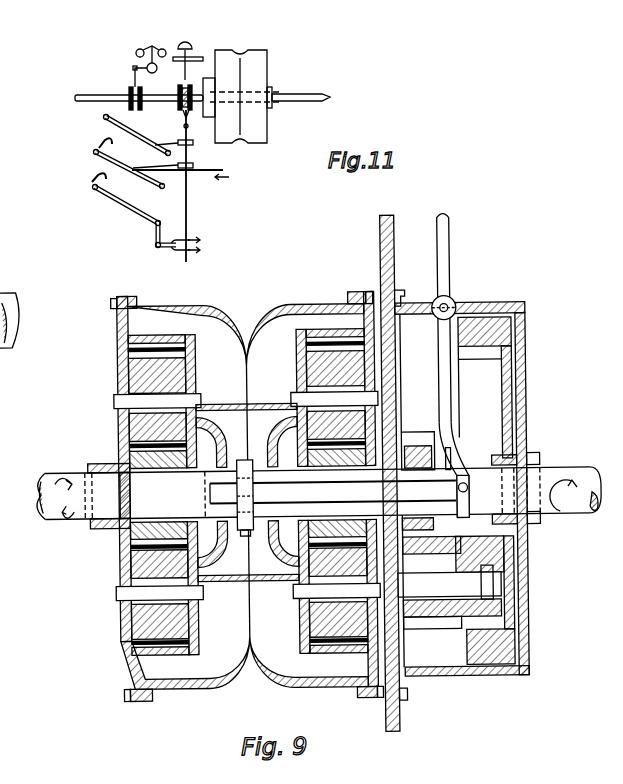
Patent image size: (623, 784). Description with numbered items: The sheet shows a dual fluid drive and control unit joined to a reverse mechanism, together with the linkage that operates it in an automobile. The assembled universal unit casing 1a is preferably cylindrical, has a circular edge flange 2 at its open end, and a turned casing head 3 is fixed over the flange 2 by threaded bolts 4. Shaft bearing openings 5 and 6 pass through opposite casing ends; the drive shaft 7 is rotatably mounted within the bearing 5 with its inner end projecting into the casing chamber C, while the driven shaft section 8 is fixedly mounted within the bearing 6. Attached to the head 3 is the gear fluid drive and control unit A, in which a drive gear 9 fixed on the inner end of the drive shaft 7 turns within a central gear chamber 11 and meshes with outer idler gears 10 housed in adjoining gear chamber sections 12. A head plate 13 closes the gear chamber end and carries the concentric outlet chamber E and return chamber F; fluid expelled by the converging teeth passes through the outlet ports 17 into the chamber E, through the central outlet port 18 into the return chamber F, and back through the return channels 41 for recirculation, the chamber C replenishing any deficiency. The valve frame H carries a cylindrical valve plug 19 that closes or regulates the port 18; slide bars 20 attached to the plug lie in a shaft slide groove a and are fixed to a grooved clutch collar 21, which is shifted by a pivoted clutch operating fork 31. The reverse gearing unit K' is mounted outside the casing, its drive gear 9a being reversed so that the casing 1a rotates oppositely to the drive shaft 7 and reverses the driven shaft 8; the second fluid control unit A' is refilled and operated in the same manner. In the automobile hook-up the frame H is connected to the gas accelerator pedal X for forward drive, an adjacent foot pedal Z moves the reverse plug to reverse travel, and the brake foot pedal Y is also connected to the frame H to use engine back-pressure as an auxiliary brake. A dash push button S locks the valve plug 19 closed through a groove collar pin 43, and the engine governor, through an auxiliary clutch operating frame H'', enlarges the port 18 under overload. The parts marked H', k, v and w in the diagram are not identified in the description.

In FIG. 9, the universal unit casing 1a is at (216, 686).
In FIG. 9, the circular edge flange 2 is at (134, 298).
In FIG. 9, the casing head 3 is at (124, 295).
In FIG. 9, the threaded bolts 4 is at (113, 301).
In FIG. 9, the shaft bearing opening 5 is at (508, 459).
In FIG. 9, the shaft bearing opening 6 is at (100, 529).
In FIG. 11, the drive shaft 7 is at (92, 95).
In FIG. 9, the drive shaft 7 is at (586, 470).
In FIG. 11, the driven shaft section 8 is at (290, 95).
In FIG. 9, the driven shaft section 8 is at (52, 476).
In FIG. 9, the drive gear 9 is at (130, 456).
In FIG. 9, the drive gear 9a is at (262, 535).
In FIG. 11, the outer idler gears 10 is at (237, 52).
In FIG. 9, the outer idler gears 10 is at (130, 368).
In FIG. 9, the central gear chamber 11 is at (128, 462).
In FIG. 9, the gear chamber sections 12 is at (126, 384).
In FIG. 9, the head plate 13 is at (198, 612).
In FIG. 9, the fluid outlet openings 17 is at (208, 404).
In FIG. 9, the central outlet port 18 is at (247, 460).
In FIG. 9, the valve plug 19 is at (242, 537).
In FIG. 9, the slide bars 20 is at (421, 440).
In FIG. 9, the clutch collar 21 is at (468, 484).
In FIG. 11, the clutch operating fork 31 is at (188, 118).
In FIG. 9, the clutch operating fork 31 is at (452, 268).
In FIG. 9, the fluid return channels 41 is at (283, 425).
In FIG. 11, the groove collar pin 43 is at (196, 61).
In FIG. 9, the fluid drive and control unit A is at (163, 488).
In FIG. 9, the reverse fluid control unit A' is at (337, 489).
In FIG. 9, the casing chamber C is at (253, 657).
In FIG. 9, the fluid outlet chamber E is at (243, 492).
In FIG. 9, the fluid return chamber F is at (248, 427).
In FIG. 11, the fluid control valve frame H is at (180, 106).
In FIG. 9, the fluid control valve frame H is at (504, 456).
In FIG. 11, the governor H' is at (156, 51).
In FIG. 11, the auxiliary clutch operating frame H'' is at (140, 109).
In FIG. 9, the reverse gearing unit K' is at (461, 475).
In FIG. 11, the dash push button S is at (188, 41).
In FIG. 9, the shaft slide groove a is at (446, 452).
In FIG. 11, the pulley flange k is at (215, 58).
In FIG. 11, the link v is at (180, 167).
In FIG. 11, the link w is at (130, 146).
In FIG. 11, the gas accelerator pedal X is at (135, 131).
In FIG. 11, the brake foot pedal Y is at (128, 157).
In FIG. 11, the foot pedal Z is at (123, 209).